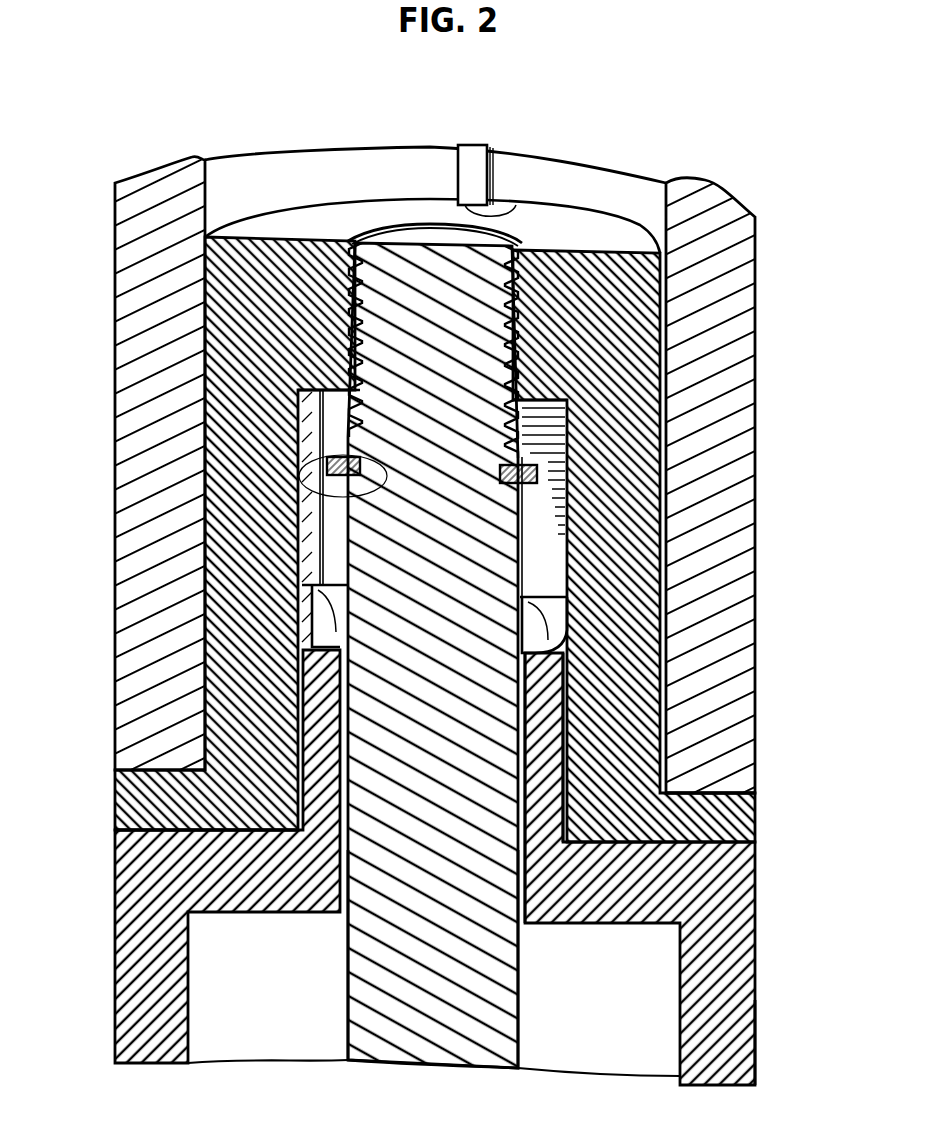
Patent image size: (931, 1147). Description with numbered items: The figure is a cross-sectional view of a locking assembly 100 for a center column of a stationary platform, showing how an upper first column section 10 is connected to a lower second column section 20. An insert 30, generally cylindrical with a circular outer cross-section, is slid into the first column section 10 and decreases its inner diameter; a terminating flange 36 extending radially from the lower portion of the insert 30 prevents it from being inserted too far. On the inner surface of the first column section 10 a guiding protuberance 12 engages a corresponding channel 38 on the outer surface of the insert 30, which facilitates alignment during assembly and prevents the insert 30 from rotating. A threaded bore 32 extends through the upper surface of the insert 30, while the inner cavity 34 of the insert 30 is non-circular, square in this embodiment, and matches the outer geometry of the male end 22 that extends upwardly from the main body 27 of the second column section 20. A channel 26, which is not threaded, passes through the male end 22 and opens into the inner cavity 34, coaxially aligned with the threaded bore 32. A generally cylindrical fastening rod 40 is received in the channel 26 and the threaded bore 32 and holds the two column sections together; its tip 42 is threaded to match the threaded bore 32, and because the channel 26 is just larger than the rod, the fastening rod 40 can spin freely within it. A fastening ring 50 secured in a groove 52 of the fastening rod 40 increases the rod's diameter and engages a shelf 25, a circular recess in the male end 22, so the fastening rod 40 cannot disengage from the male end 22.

The locking assembly 100 is at (709, 140).
The first column section 10 is at (743, 286).
The guiding protuberance 12 is at (460, 163).
The second column section 20 is at (737, 913).
The male end 22 is at (557, 707).
The shelf 25 is at (338, 584).
The channel 26 is at (343, 855).
The main body 27 is at (757, 1027).
The insert 30 is at (617, 333).
The threaded bore 32 is at (517, 298).
The inner cavity 34 is at (540, 451).
The terminating flange 36 is at (717, 822).
The channel 38 is at (505, 212).
The fastening rod 40 is at (450, 617).
The tip 42 is at (333, 322).
The fastening ring 50 is at (300, 478).
The groove 52 is at (328, 467).